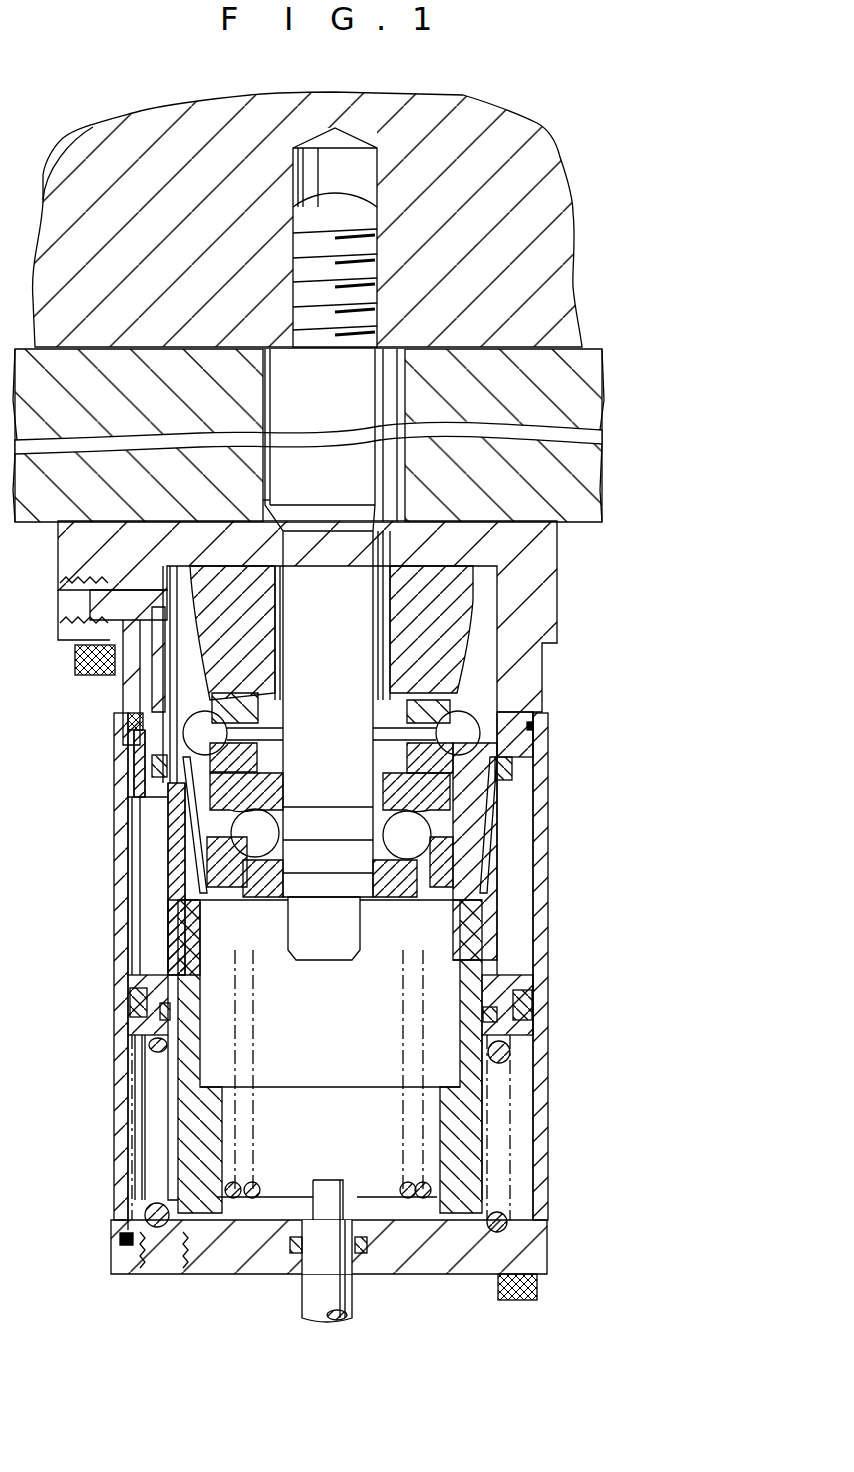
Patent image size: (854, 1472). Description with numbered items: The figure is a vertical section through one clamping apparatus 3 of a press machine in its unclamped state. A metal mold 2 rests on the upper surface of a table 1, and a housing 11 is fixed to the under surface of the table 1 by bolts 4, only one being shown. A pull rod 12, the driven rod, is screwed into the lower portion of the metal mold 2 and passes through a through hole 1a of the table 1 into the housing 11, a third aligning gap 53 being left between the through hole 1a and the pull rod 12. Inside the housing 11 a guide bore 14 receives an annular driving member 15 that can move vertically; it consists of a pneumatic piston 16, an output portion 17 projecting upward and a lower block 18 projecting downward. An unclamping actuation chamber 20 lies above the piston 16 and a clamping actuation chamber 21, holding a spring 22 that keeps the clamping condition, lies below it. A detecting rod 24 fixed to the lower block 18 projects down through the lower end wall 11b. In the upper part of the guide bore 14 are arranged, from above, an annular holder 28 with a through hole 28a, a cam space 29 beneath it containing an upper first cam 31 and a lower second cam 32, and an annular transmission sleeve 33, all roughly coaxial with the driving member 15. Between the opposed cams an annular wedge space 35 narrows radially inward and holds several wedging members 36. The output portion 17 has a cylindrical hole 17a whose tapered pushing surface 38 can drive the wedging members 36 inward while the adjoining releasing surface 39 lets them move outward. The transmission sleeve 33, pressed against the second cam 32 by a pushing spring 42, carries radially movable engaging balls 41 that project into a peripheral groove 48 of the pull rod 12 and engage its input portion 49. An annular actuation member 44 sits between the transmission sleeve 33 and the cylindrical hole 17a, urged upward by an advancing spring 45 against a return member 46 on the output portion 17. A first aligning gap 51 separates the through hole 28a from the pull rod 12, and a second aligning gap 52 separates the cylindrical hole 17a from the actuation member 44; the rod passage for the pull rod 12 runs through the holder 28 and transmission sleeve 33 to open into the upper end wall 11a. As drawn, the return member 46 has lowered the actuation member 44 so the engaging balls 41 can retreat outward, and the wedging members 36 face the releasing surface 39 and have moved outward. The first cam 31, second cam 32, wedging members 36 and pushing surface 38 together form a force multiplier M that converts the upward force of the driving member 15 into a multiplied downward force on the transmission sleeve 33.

The table 1 is at (575, 460).
The through hole 1a is at (395, 388).
The metal mold 2 is at (545, 200).
The clamping apparatus 3 is at (578, 640).
The bolt 4 is at (75, 660).
The housing 11 is at (550, 1068).
The upper end wall 11a is at (487, 545).
The lower end wall 11b is at (430, 1262).
The pull rod 12 is at (262, 472).
The guide bore 14 is at (520, 1143).
The driving member 15 is at (535, 985).
The pneumatic piston 16 is at (128, 992).
The output portion 17 is at (176, 880).
The cylindrical hole 17a is at (190, 940).
The lower block 18 is at (170, 1130).
The unclamping actuation chamber 20 is at (165, 800).
The clamping actuation chamber 21 is at (127, 1190).
The spring 22 is at (135, 1055).
The detecting rod 24 is at (302, 1305).
The holder 28 is at (480, 612).
The through hole 28a is at (378, 648).
The cam space 29 is at (240, 700).
The first cam 31 is at (455, 705).
The second cam 32 is at (540, 775).
The transmission sleeve 33 is at (460, 805).
The wedge space 35 is at (370, 735).
The wedging member 36 is at (520, 735).
The tapered pushing surface 38 is at (185, 835).
The releasing surface 39 is at (150, 760).
The engaging ball 41 is at (480, 840).
The pushing spring 42 is at (402, 1183).
The actuation member 44 is at (450, 950).
The advancing spring 45 is at (420, 1183).
The return member 46 is at (470, 893).
The peripheral groove 48 is at (355, 775).
The input portion 49 is at (355, 880).
The first aligning gap 51 is at (392, 628).
The second aligning gap 52 is at (470, 920).
The third aligning gap 53 is at (400, 490).
The force multiplier M is at (512, 750).